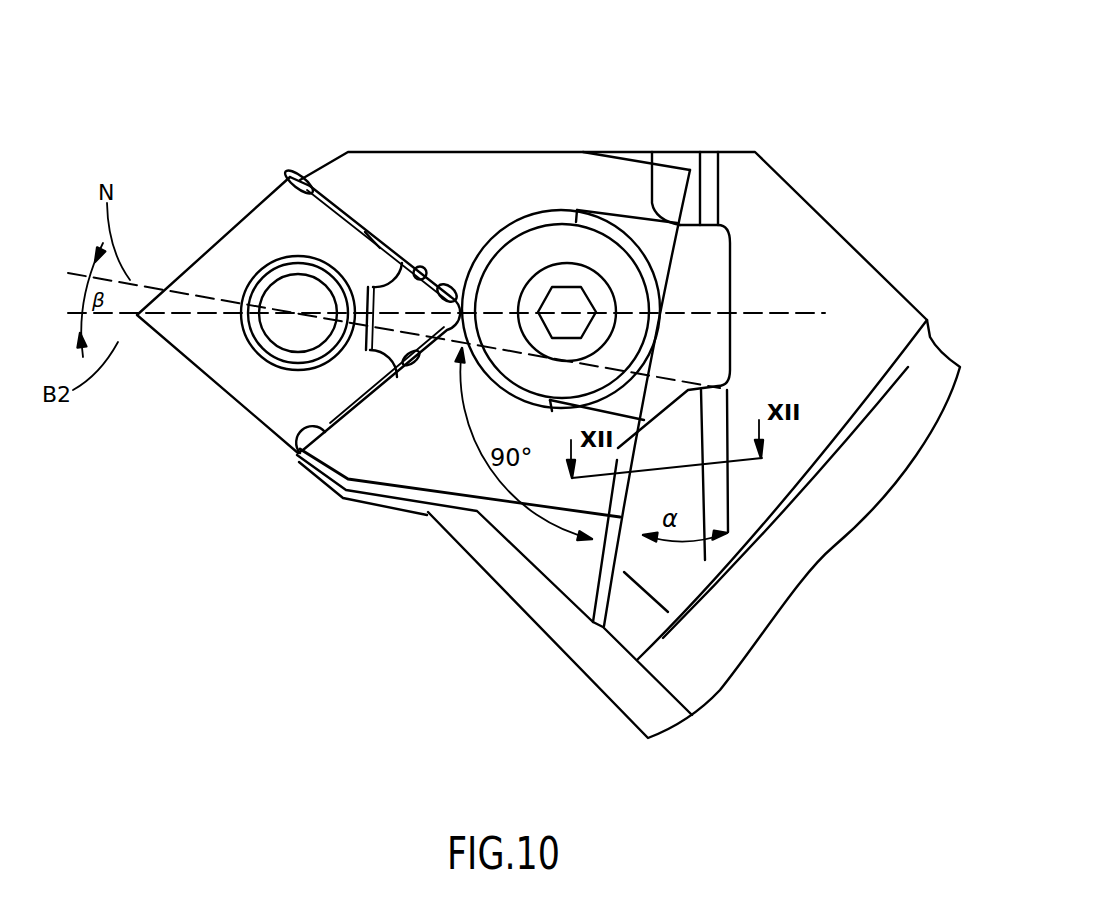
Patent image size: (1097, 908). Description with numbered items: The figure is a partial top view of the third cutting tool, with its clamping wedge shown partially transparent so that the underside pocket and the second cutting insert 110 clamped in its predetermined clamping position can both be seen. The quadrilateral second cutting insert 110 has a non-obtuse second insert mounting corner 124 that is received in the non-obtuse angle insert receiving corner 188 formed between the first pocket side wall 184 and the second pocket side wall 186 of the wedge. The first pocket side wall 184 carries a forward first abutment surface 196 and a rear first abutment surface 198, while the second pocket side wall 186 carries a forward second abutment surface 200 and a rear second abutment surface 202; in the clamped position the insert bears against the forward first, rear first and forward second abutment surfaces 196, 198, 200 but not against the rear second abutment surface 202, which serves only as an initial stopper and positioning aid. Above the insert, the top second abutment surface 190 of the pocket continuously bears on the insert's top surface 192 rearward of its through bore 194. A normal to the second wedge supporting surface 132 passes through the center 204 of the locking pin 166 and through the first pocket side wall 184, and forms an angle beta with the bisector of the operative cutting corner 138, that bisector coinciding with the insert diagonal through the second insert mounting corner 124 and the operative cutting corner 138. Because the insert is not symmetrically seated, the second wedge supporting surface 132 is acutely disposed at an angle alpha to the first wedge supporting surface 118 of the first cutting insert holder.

The second cutting insert 110 is at (220, 265).
The first wedge supporting surface 118 is at (713, 547).
The second insert mounting corner 124 is at (458, 395).
The second wedge supporting surface 132 is at (612, 583).
The operative cutting corner 138 is at (121, 317).
The locking pin 166 is at (277, 327).
The first pocket side wall 184 is at (314, 412).
The second pocket side wall 186 is at (322, 204).
The non-obtuse angle insert receiving corner 188 is at (440, 286).
The top second abutment surface 190 is at (377, 307).
The top surface 192 is at (247, 242).
The through bore 194 is at (298, 315).
The forward first abutment surface 196 is at (297, 465).
The rear first abutment surface 198 is at (398, 380).
The forward second abutment surface 200 is at (297, 168).
The rear second abutment surface 202 is at (415, 266).
The center 204 is at (290, 360).